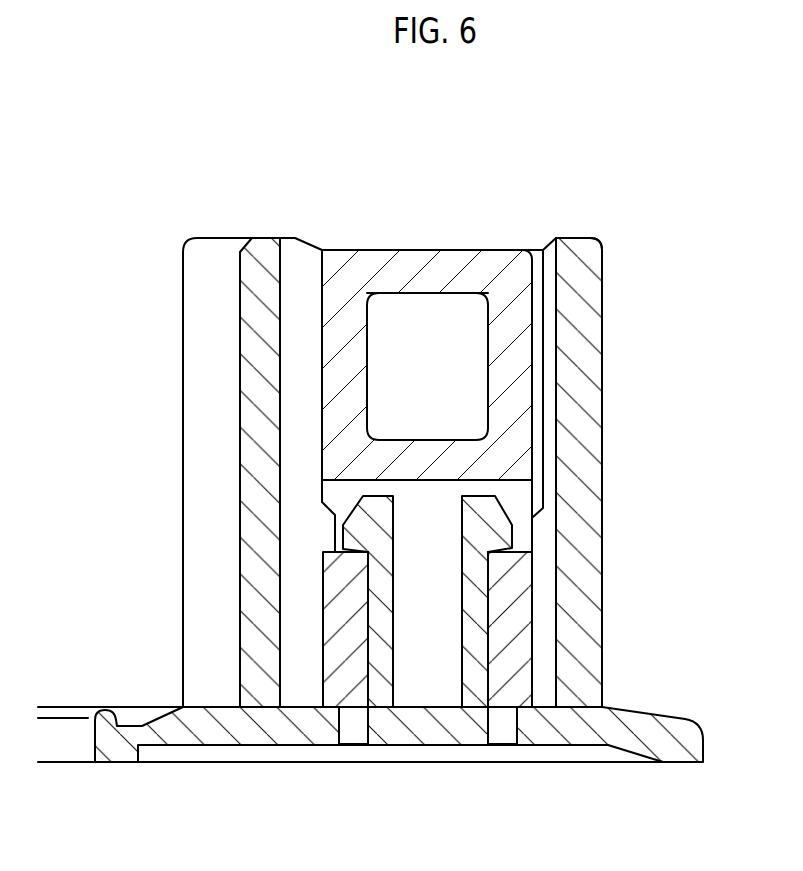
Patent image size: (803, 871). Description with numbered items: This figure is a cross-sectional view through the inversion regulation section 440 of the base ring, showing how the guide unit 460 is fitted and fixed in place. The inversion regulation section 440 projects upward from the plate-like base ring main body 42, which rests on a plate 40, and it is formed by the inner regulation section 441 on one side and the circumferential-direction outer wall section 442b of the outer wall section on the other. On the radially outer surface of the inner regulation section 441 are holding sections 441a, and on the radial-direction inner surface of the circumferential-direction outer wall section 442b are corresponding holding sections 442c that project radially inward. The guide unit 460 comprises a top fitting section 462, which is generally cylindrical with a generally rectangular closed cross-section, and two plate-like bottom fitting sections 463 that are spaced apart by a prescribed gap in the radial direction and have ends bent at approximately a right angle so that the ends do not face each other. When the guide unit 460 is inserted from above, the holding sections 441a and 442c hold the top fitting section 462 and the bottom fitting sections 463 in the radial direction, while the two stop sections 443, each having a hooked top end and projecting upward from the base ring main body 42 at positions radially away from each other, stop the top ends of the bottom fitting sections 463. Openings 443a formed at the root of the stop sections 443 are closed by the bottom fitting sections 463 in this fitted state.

The circuit board 40 is at (591, 764).
The base ring main body 42 is at (208, 733).
The inversion regulation section 440 is at (181, 261).
The inner regulation section 441 is at (260, 318).
The holding sections 441a is at (300, 280).
The circumferential-direction outer wall section 442b is at (582, 347).
The holding sections 442c is at (550, 263).
The stop sections 443 is at (360, 527).
The openings 443a is at (355, 727).
The guide unit 460 is at (398, 248).
The top fitting section 462 is at (450, 263).
The bottom fitting sections 463 is at (345, 620).